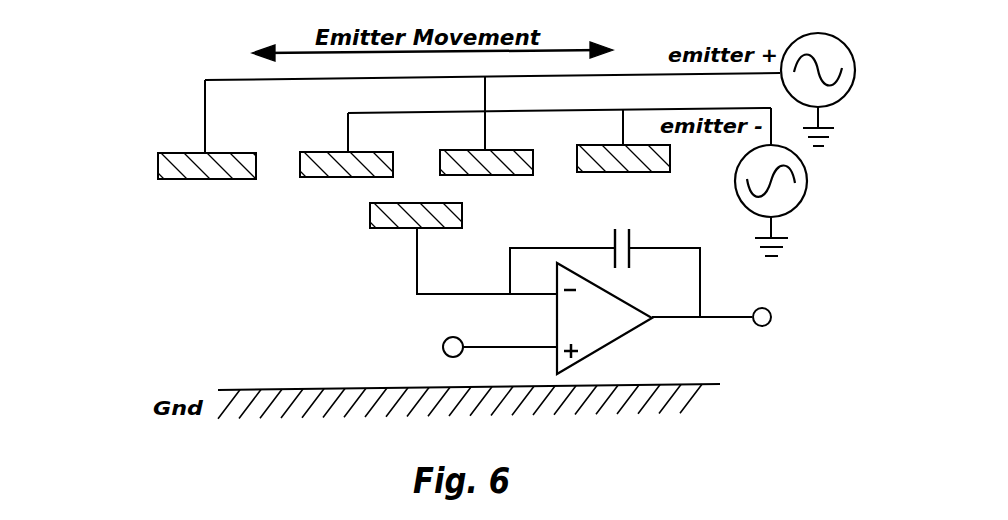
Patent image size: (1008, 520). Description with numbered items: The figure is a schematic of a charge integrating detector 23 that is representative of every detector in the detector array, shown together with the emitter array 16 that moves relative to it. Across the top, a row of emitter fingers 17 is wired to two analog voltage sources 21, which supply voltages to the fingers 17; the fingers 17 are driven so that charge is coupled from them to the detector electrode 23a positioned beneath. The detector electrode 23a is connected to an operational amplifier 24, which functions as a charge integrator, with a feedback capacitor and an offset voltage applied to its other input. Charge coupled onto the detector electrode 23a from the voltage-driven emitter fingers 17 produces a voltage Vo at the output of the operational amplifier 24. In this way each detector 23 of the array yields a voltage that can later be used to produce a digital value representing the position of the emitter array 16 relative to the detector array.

The emitter electrode array 16 is at (131, 146).
The emitter fingers 17 is at (298, 168).
The analog voltage sources 21 is at (856, 68).
The charge integrating detector 23 is at (292, 203).
The detector electrode 23a is at (462, 218).
The operational amplifier 24 is at (597, 348).